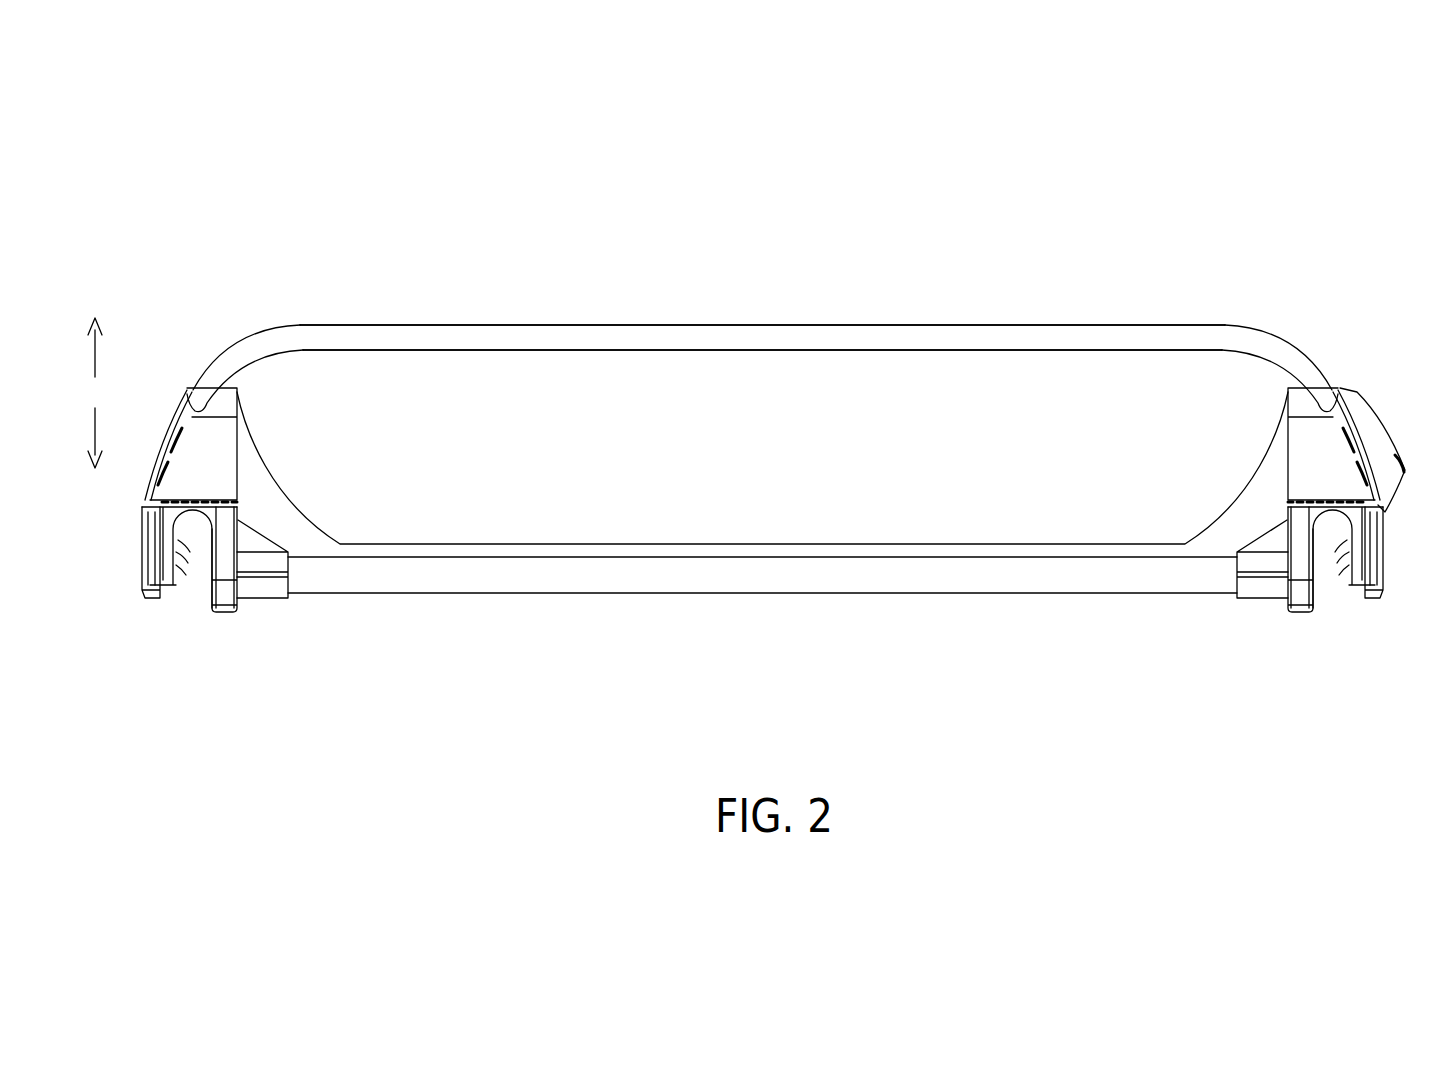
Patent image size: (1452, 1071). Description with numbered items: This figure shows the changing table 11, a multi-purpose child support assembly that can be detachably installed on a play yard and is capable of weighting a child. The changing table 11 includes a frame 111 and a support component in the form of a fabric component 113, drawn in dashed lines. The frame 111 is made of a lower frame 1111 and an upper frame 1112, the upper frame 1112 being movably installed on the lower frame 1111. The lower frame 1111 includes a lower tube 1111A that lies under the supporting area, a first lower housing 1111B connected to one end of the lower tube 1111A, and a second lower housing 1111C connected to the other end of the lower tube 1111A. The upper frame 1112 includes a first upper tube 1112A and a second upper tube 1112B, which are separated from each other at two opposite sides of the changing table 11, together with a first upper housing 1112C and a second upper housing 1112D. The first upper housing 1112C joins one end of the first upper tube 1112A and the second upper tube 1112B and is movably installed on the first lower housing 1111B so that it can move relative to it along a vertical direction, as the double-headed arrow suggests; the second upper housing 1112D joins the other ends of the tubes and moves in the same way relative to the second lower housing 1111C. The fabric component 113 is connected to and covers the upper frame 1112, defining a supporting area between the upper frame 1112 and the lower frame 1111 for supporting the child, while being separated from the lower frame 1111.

The changing table 11 is at (1173, 146).
The frame 111 is at (1450, 318).
The lower frame 1111 is at (1402, 546).
The upper frame 1112 is at (1382, 396).
The first upper tube 1112A is at (812, 340).
The second upper tube 1112B is at (762, 337).
The first upper housing 1112C is at (1313, 327).
The second upper housing 1112D is at (210, 331).
The lower tube 1111A is at (812, 577).
The first lower housing 1111B is at (1379, 624).
The second lower housing 1111C is at (157, 624).
The fabric component 113 is at (1075, 544).